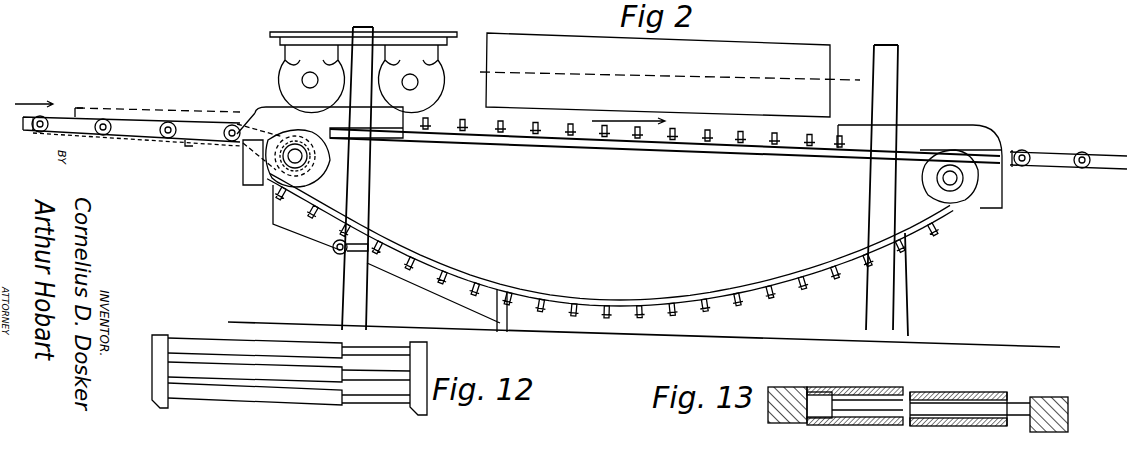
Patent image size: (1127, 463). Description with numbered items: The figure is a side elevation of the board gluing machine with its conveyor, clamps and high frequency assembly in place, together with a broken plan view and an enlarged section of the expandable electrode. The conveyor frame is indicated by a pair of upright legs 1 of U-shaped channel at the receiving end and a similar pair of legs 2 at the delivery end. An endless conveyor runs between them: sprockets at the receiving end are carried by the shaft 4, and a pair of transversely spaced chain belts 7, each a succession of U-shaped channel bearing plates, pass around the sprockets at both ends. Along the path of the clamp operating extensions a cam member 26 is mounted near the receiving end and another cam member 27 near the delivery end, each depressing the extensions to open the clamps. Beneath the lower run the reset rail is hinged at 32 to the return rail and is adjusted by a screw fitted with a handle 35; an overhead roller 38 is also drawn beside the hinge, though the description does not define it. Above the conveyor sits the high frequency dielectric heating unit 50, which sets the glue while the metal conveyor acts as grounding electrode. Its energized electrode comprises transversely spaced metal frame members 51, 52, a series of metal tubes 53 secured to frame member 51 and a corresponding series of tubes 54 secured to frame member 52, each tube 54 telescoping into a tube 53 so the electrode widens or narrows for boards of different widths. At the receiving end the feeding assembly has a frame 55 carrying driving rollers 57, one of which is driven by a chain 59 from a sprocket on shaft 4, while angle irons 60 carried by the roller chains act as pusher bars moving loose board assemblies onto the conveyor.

In FIG. 2, the upright legs 1 is at (358, 170).
In FIG. 2, the legs 2 is at (876, 181).
In FIG. 2, the shaft 4 is at (298, 158).
In FIG. 2, the chain belts 7 is at (556, 296).
In FIG. 2, the cam member 26 is at (320, 122).
In FIG. 2, the cam member 27 is at (920, 166).
In FIG. 2, the hinge 32 is at (412, 79).
In FIG. 2, the handle 35 is at (344, 255).
In FIG. 2, the overhead roller 38 is at (312, 79).
In FIG. 2, the high frequency dielectric heating unit 50 is at (670, 75).
In FIG. 12, the metal frame member 51 is at (427, 352).
In FIG. 13, the metal frame member 51 is at (1068, 415).
In FIG. 12, the metal frame member 52 is at (152, 380).
In FIG. 13, the metal frame member 52 is at (800, 375).
In FIG. 12, the metal tubes 53 is at (362, 330).
In FIG. 13, the metal tubes 53 is at (1010, 393).
In FIG. 12, the tubes 54 is at (222, 342).
In FIG. 13, the tubes 54 is at (820, 392).
In FIG. 2, the frame 55 is at (140, 130).
In FIG. 2, the driving rollers 57 is at (24, 121).
In FIG. 2, the chain 59 is at (246, 163).
In FIG. 2, the angle irons 60 is at (83, 85).